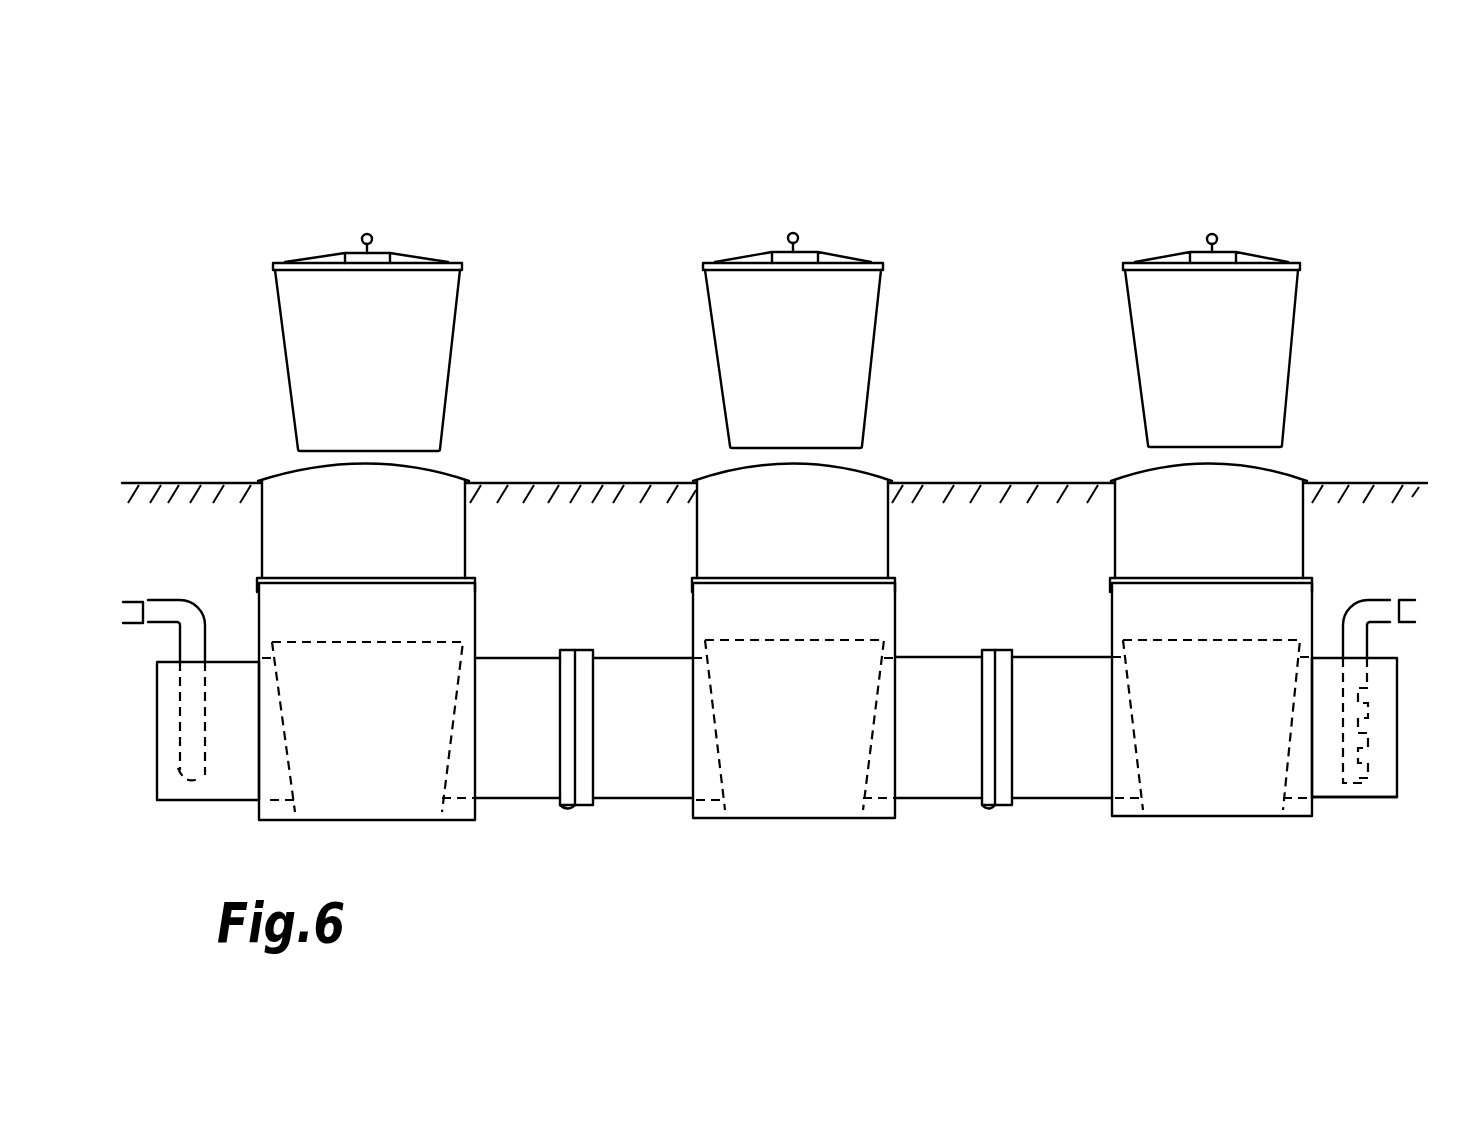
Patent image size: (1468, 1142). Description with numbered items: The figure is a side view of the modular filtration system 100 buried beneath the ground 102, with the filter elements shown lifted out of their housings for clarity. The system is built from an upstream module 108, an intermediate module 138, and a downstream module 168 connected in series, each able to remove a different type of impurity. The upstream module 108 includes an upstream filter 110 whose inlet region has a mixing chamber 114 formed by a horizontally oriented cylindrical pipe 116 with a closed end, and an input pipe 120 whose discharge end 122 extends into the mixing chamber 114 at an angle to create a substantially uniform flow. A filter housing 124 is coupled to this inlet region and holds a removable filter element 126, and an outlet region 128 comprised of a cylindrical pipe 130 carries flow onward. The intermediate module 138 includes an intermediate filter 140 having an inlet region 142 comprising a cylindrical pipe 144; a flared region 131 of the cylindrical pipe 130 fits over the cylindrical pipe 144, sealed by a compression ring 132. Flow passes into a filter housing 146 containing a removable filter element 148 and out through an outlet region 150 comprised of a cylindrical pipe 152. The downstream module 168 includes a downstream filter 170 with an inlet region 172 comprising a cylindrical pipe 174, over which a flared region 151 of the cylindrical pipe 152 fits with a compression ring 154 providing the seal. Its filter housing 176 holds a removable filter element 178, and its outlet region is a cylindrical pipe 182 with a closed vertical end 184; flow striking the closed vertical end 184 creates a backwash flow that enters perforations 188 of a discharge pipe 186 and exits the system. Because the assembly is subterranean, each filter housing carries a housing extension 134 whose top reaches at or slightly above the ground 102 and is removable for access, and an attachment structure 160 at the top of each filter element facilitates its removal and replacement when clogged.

The modular filtration system 100 is at (1230, 127).
The ground 102 is at (178, 482).
The upstream module 108 is at (352, 314).
The upstream filter 110 is at (333, 594).
The mixing chamber 114 is at (226, 700).
The horizontally oriented cylindrical pipe 116 is at (213, 801).
The input pipe 120 is at (188, 605).
The discharge end 122 is at (160, 776).
The filter housing 124 is at (276, 808).
The removable filter element 126 is at (390, 342).
The outlet region 128 is at (494, 661).
The cylindrical pipe 130 is at (492, 800).
The flared region 131 is at (546, 655).
The compression ring 132 is at (572, 806).
The housing extension 134 is at (384, 537).
The intermediate module 138 is at (774, 311).
The intermediate filter 140 is at (842, 590).
The inlet region 142 is at (626, 665).
The cylindrical pipe 144 is at (620, 800).
The filter housing 146 is at (709, 805).
The removable filter element 148 is at (820, 352).
The outlet region 150 is at (922, 665).
The flared region 151 is at (966, 656).
The cylindrical pipe 152 is at (897, 800).
The compression ring 154 is at (990, 806).
The attachment structure 160 is at (373, 236).
The downstream module 168 is at (1194, 301).
The downstream filter 170 is at (1286, 596).
The inlet region 172 is at (1062, 660).
The cylindrical pipe 174 is at (1038, 800).
The filter housing 176 is at (1128, 803).
The removable filter element 178 is at (1240, 358).
The cylindrical pipe 182 is at (1328, 800).
The closed vertical end 184 is at (1397, 738).
The discharge pipe 186 is at (1368, 606).
The perforations 188 is at (1372, 690).